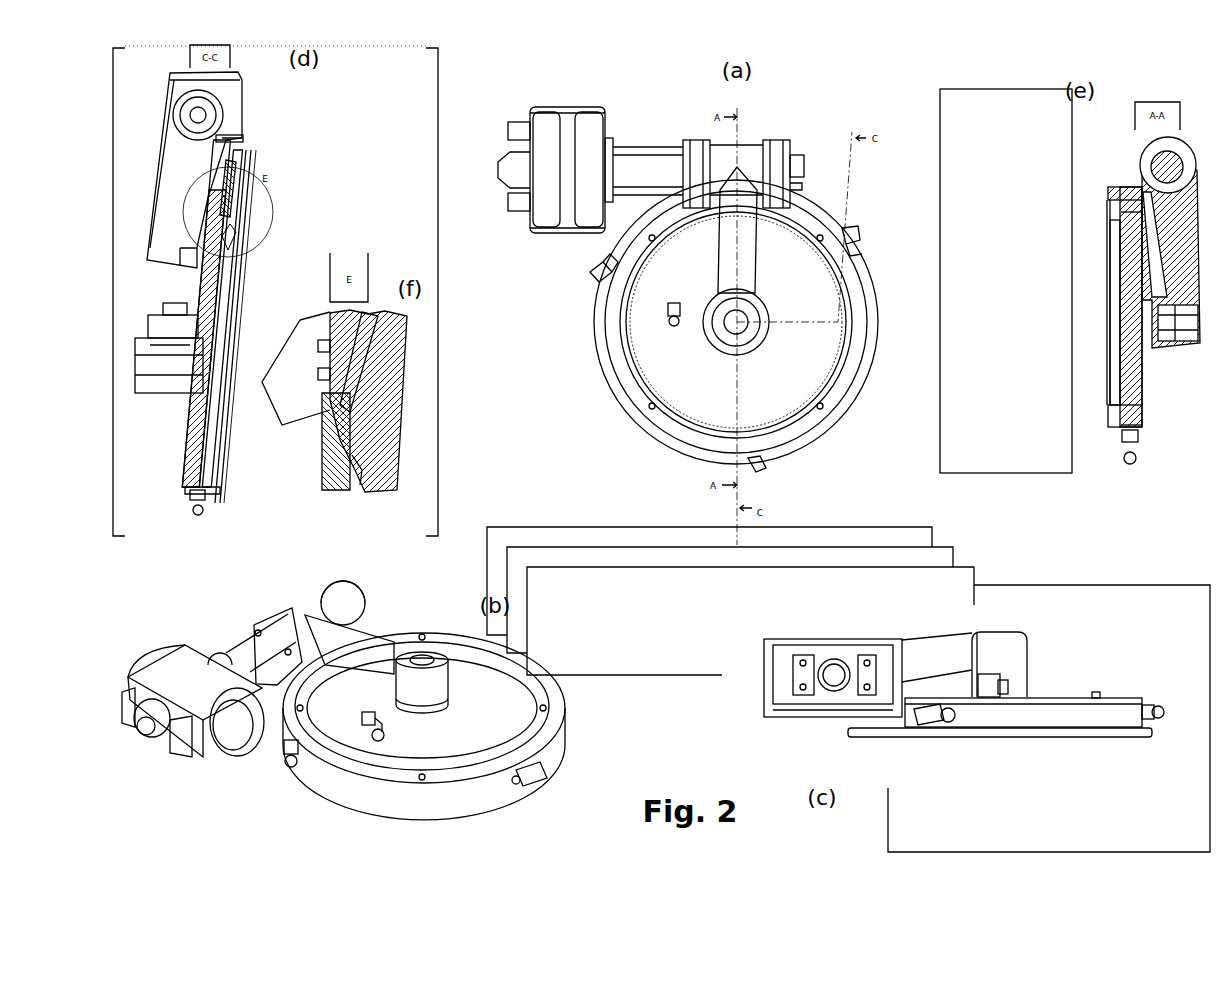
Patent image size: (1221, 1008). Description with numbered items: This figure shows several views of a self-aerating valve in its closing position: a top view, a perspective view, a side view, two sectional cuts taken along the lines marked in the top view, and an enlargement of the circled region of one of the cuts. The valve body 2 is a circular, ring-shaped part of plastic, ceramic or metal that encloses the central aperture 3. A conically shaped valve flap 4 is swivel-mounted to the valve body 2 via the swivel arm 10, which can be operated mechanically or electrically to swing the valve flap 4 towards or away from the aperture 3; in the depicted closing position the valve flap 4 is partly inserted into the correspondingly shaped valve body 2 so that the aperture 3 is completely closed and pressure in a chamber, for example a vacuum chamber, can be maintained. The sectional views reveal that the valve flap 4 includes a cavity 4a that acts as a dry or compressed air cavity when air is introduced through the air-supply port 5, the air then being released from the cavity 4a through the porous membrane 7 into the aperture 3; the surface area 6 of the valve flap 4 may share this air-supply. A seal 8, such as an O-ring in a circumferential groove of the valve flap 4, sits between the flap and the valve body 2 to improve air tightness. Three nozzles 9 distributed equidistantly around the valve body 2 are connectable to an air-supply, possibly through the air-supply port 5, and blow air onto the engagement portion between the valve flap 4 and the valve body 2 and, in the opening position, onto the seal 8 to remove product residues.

The valve body 2 is at (803, 225).
The aperture 3 is at (240, 411).
The valve flap 4 is at (789, 430).
The cavity 4a is at (215, 309).
The air-supply port 5 is at (670, 319).
The surface area 6 is at (208, 440).
The porous membrane 7 is at (221, 334).
The seal 8 is at (225, 246).
The nozzle 9 is at (594, 278).
The swivel arm 10 is at (726, 202).